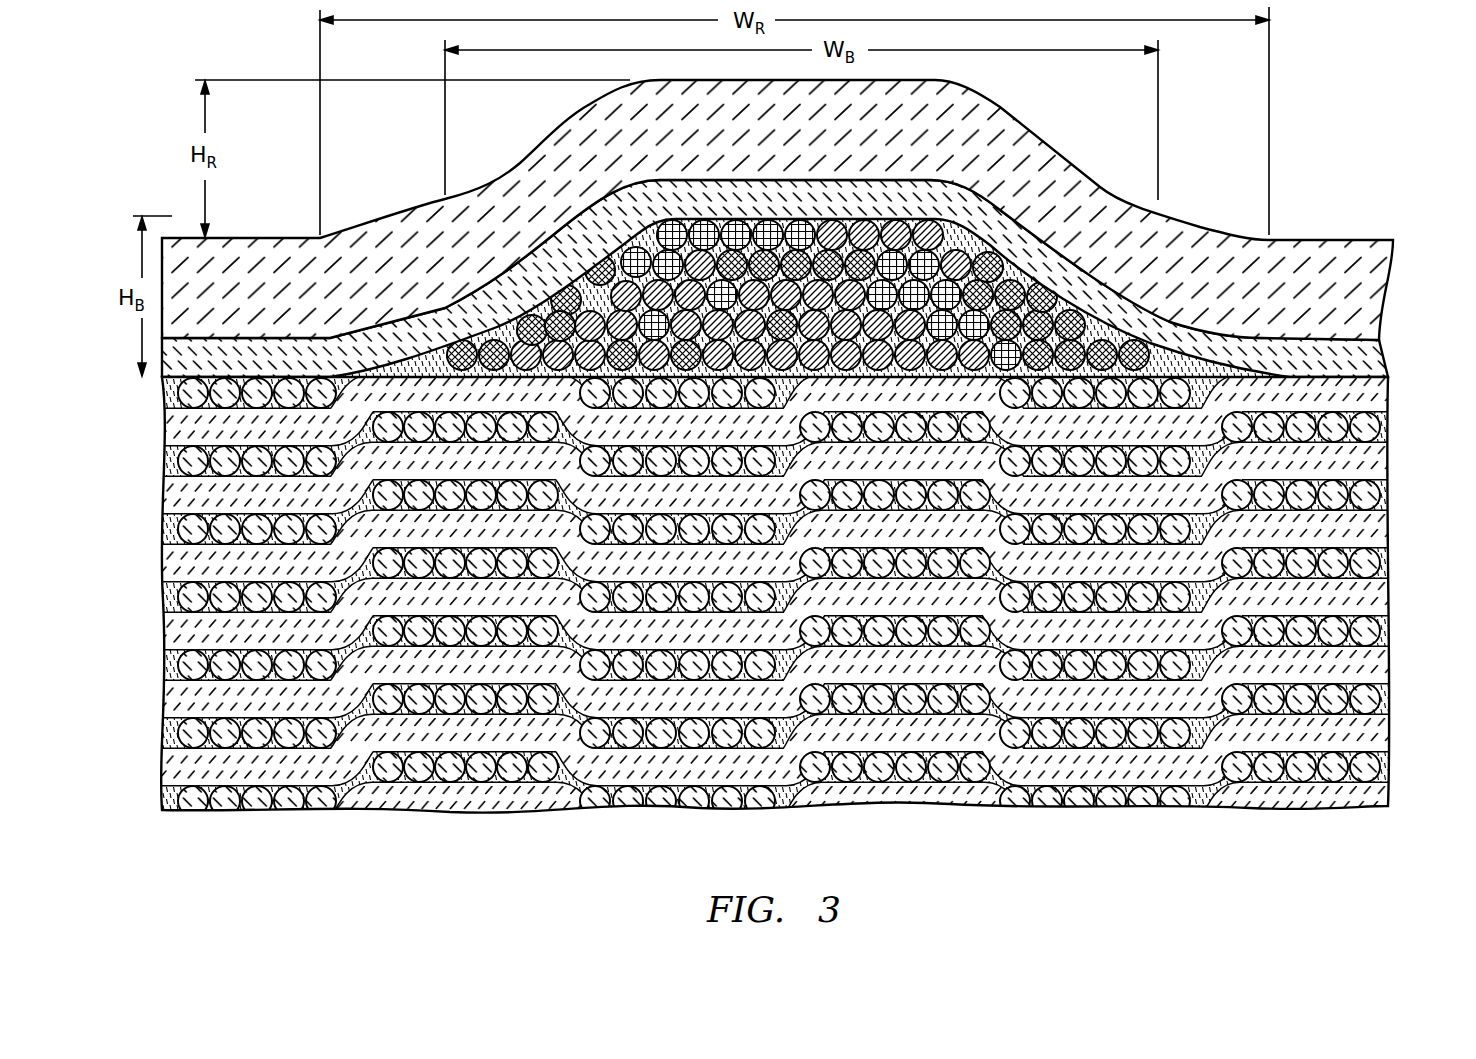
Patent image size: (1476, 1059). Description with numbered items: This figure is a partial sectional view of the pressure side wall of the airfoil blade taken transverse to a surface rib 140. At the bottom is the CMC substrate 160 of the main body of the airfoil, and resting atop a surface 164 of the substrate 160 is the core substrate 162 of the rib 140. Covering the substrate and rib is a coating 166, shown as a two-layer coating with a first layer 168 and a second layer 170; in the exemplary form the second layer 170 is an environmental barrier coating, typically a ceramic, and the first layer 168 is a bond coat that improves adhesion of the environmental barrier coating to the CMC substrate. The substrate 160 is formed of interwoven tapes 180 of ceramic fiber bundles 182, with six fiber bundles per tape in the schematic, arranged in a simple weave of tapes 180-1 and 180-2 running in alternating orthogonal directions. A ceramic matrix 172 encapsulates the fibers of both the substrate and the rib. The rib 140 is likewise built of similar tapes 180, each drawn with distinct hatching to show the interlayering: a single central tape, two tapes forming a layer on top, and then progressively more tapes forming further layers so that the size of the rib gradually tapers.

The rib 140 is at (1066, 149).
The CMC substrate 160 is at (160, 806).
The core substrate 162 is at (1066, 299).
The surface 164 is at (242, 377).
The coating 166 is at (1398, 240).
The first layer 168 is at (1332, 352).
The second layer 170 is at (1294, 262).
The ceramic matrix 172 is at (1197, 372).
The tapes 180 is at (948, 222).
The tape 180-1 is at (978, 812).
The tape 180-2 is at (693, 782).
The fiber bundles 182 is at (997, 803).